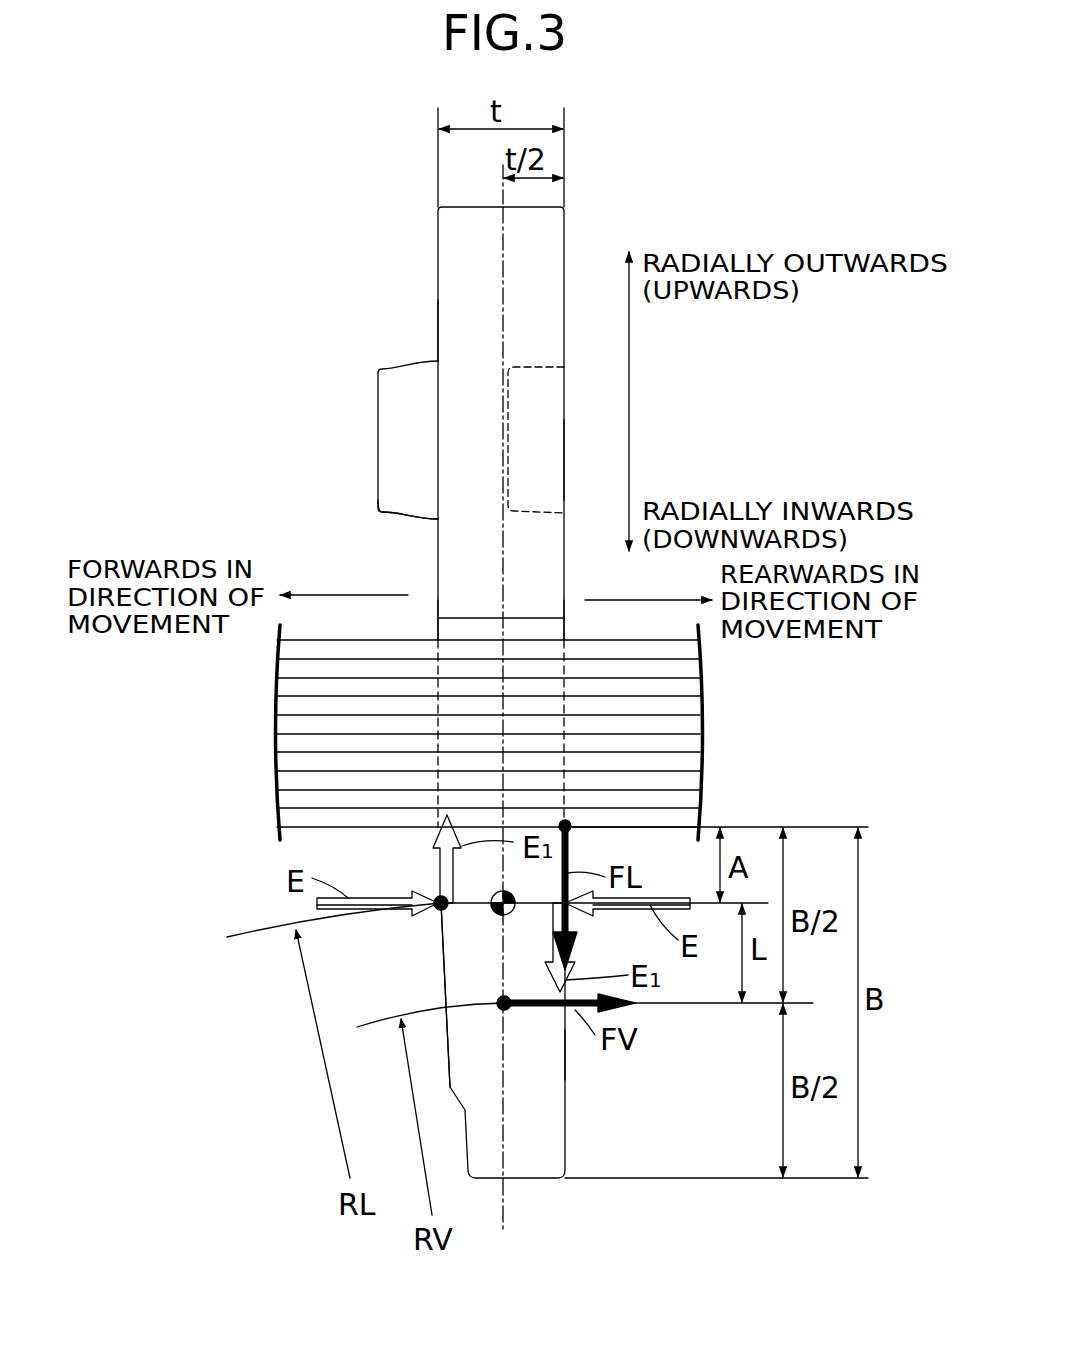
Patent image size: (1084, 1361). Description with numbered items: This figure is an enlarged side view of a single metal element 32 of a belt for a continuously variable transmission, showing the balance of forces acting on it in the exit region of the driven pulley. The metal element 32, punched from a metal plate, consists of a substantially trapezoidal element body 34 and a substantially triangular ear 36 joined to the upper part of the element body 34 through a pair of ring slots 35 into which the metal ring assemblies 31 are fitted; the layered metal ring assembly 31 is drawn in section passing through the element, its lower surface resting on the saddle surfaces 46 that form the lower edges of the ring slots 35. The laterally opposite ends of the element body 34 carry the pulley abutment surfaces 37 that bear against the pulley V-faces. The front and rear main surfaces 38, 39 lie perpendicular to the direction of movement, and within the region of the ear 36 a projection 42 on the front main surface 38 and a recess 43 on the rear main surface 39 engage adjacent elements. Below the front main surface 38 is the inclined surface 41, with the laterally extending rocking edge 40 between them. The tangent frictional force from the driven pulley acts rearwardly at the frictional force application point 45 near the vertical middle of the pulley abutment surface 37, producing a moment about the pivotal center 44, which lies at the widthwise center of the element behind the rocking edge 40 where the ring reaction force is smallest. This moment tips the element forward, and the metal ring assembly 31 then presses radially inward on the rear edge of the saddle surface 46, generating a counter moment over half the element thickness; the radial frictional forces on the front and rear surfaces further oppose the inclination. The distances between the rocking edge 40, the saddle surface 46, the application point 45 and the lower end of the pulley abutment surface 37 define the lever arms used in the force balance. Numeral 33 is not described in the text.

The metal ring assembly 31 is at (527, 756).
The metal element 32 is at (408, 318).
The link plates 33 is at (687, 745).
The element body 34 is at (568, 1119).
The ring slot 35 is at (483, 630).
The ear 36 is at (437, 341).
The pulley abutment surface 37 is at (540, 1055).
The front main surface 38 is at (438, 461).
The rear main surface 39 is at (564, 450).
The rocking edge 40 is at (437, 897).
The inclined surface 41 is at (446, 960).
The projection 42 is at (378, 410).
The recess 43 is at (535, 368).
The center of pivotal movement 44 is at (496, 896).
The frictional force application point 45 is at (500, 1010).
The saddle surface 46 is at (538, 827).